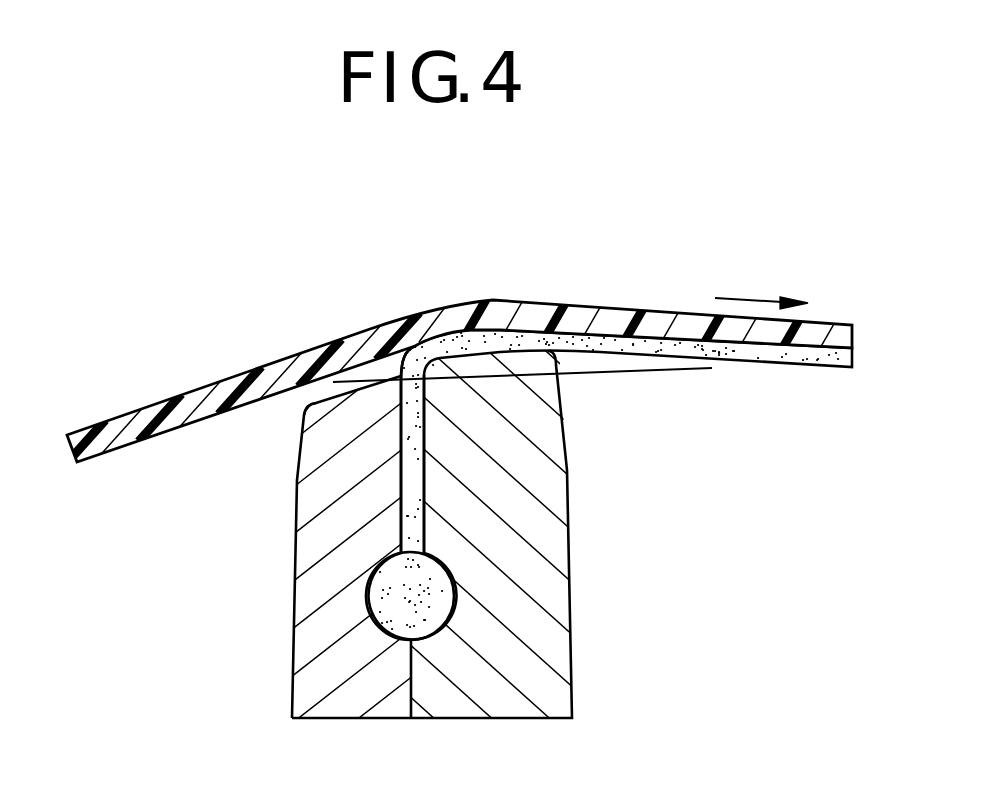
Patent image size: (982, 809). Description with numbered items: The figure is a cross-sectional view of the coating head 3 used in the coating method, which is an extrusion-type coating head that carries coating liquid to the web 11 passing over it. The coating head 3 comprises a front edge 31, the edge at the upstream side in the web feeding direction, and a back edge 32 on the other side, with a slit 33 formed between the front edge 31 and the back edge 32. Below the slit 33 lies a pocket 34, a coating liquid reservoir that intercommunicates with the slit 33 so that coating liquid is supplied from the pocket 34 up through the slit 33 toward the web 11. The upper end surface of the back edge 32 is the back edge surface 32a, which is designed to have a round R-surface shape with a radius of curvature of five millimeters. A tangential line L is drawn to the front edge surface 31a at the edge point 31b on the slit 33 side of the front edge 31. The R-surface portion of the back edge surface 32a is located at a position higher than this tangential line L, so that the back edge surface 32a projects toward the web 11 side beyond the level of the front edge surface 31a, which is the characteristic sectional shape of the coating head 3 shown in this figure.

The second coating head 3 is at (482, 502).
The web 11 is at (195, 390).
The front edge 31 is at (327, 525).
The front edge surface 31a is at (312, 404).
The edge point 31b is at (387, 347).
The back edge 32 is at (522, 497).
The back edge surface 32a is at (523, 335).
The slit 33 is at (422, 525).
The pocket 34 is at (423, 640).
The tangential line L is at (682, 373).